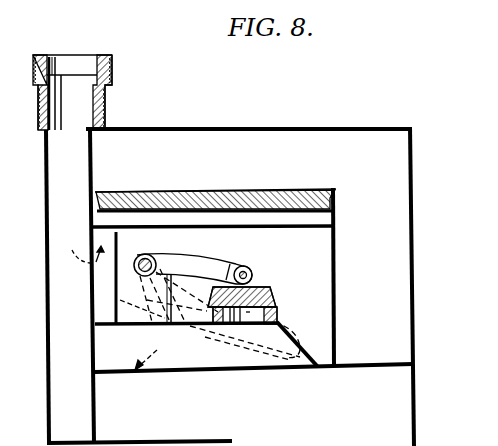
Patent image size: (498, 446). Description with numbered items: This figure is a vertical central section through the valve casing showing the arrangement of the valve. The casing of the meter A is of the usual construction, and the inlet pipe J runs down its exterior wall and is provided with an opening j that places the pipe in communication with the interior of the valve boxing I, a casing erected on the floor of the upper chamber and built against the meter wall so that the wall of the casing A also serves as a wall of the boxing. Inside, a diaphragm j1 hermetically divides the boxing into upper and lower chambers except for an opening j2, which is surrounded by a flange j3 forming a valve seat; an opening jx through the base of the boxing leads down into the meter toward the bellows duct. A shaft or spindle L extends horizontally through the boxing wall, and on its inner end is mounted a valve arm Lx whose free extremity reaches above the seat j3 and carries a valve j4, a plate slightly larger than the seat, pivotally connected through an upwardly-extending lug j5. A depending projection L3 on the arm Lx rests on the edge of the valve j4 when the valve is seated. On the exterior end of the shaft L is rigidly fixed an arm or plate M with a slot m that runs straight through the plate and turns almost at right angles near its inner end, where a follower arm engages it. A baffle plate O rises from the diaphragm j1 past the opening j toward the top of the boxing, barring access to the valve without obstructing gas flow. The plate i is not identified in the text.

The inlet pipe J is at (105, 99).
The casing of the meter A is at (230, 286).
The plate i is at (218, 197).
The casing (valve boxing) I is at (336, 242).
The baffle plate O is at (115, 301).
The shaft or spindle L is at (100, 236).
The valve arm Lx is at (206, 266).
The depending projection L3 is at (240, 260).
The arm or plate M is at (187, 299).
The slot m is at (142, 307).
The opening j is at (92, 282).
The diaphragm j1 is at (297, 344).
The opening j2 is at (233, 324).
The flange (valve seat) j3 is at (278, 312).
The valve j4 is at (274, 293).
The upwardly-extending lug j5 is at (252, 272).
The opening jx is at (142, 379).